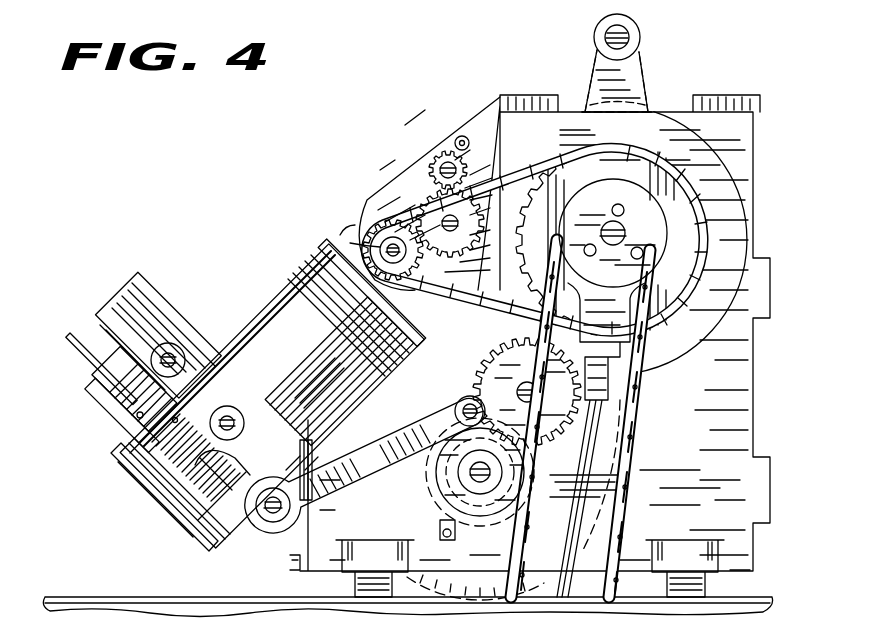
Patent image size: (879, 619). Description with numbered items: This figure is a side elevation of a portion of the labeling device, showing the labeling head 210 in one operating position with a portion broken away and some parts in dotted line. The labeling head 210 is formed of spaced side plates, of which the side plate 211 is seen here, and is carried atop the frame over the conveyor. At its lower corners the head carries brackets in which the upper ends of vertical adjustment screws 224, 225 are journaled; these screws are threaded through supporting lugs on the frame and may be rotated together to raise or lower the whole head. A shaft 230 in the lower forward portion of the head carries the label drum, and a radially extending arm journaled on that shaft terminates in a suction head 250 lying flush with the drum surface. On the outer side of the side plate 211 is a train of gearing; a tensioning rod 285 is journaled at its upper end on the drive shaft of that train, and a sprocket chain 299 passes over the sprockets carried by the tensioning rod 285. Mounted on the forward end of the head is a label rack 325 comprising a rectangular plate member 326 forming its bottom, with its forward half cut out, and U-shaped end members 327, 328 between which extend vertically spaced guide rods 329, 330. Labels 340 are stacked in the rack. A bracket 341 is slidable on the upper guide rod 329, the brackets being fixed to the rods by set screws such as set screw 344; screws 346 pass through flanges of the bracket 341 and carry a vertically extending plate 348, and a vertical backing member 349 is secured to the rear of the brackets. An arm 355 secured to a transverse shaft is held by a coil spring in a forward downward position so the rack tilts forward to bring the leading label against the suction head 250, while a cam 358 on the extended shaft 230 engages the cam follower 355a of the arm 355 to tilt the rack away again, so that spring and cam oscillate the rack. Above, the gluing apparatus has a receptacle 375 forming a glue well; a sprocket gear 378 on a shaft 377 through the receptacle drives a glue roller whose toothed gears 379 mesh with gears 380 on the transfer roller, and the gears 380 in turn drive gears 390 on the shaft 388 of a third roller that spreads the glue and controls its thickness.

The labeling head 210 is at (785, 95).
The side plate 211 is at (737, 413).
The vertical adjustment screw 224 is at (357, 583).
The vertical adjustment screw 225 is at (705, 585).
The shaft 230 is at (455, 478).
The suction head 250 is at (396, 404).
The tensioning rod 285 is at (625, 507).
The sprocket chain 299 is at (630, 492).
The label rack 325 is at (163, 275).
The rectangular plate member 326 is at (220, 548).
The U-shaped end member 327 is at (195, 516).
The U-shaped end member 328 is at (330, 248).
The guide rod 329 is at (247, 338).
The guide rod 330 is at (313, 388).
The labels 340 is at (343, 352).
The bracket 341 is at (131, 410).
The set screw 344 is at (135, 440).
The screws 346 is at (185, 362).
The vertically extending plate 348 is at (180, 328).
The vertical backing member 349 is at (108, 378).
The arm 355 is at (366, 465).
The cam follower 355a is at (478, 392).
The cam 358 is at (444, 533).
The receptacle 375 is at (400, 178).
The shaft 377 is at (345, 247).
The sprocket gear 378 is at (368, 248).
The toothed gears 379 is at (362, 215).
The gears 380 is at (432, 200).
The shaft 388 is at (465, 136).
The gears 390 is at (447, 152).